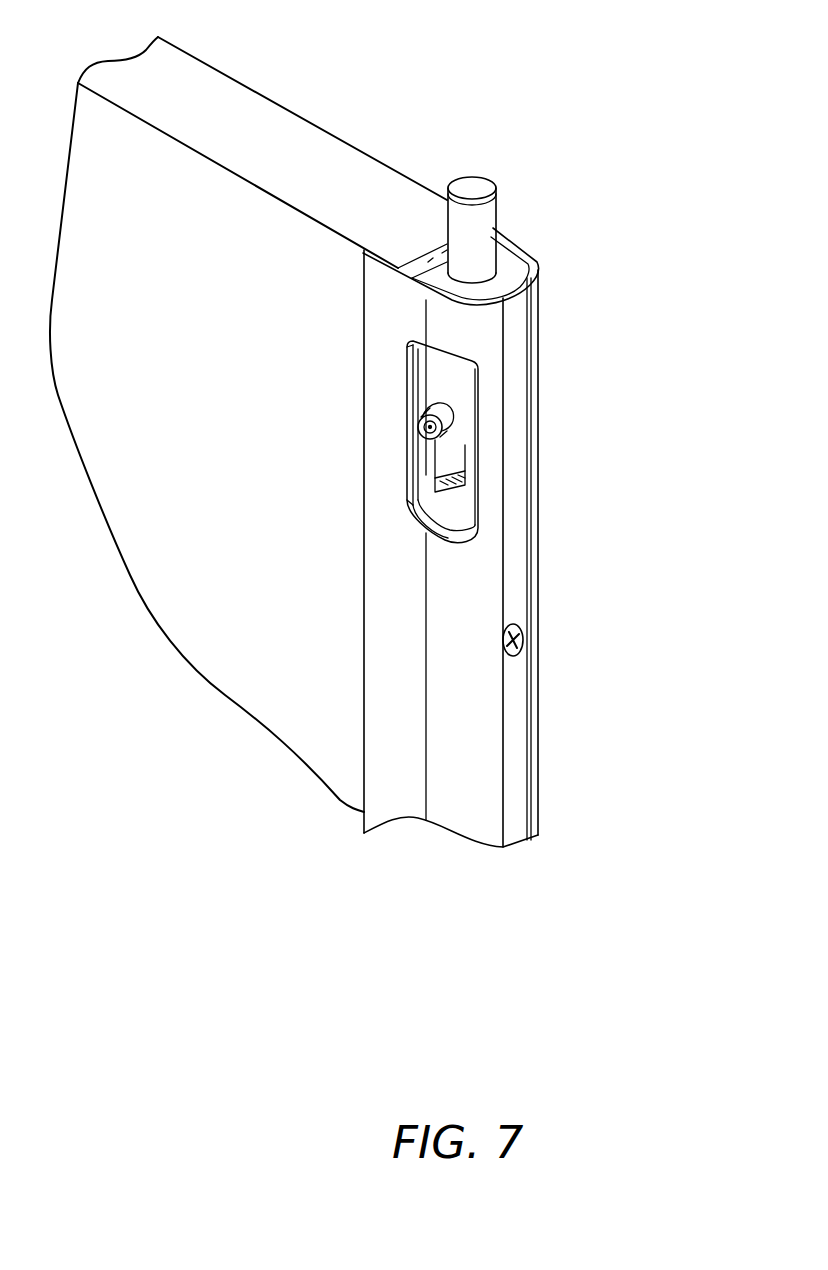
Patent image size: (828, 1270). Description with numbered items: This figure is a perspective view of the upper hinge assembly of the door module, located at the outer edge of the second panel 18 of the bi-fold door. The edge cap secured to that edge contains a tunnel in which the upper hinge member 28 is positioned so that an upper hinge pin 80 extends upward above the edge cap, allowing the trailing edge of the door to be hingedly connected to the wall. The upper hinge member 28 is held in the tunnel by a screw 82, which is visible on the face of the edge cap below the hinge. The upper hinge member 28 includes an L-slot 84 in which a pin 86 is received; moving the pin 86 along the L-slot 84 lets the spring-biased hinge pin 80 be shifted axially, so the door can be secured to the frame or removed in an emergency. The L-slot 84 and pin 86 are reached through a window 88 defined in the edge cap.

The second panel 18 is at (310, 162).
The upper hinge member 28 is at (610, 240).
The upper hinge pin 80 is at (470, 187).
The screw 82 is at (522, 638).
The L-slot 84 is at (445, 456).
The pin 86 is at (450, 427).
The window 88 is at (457, 366).